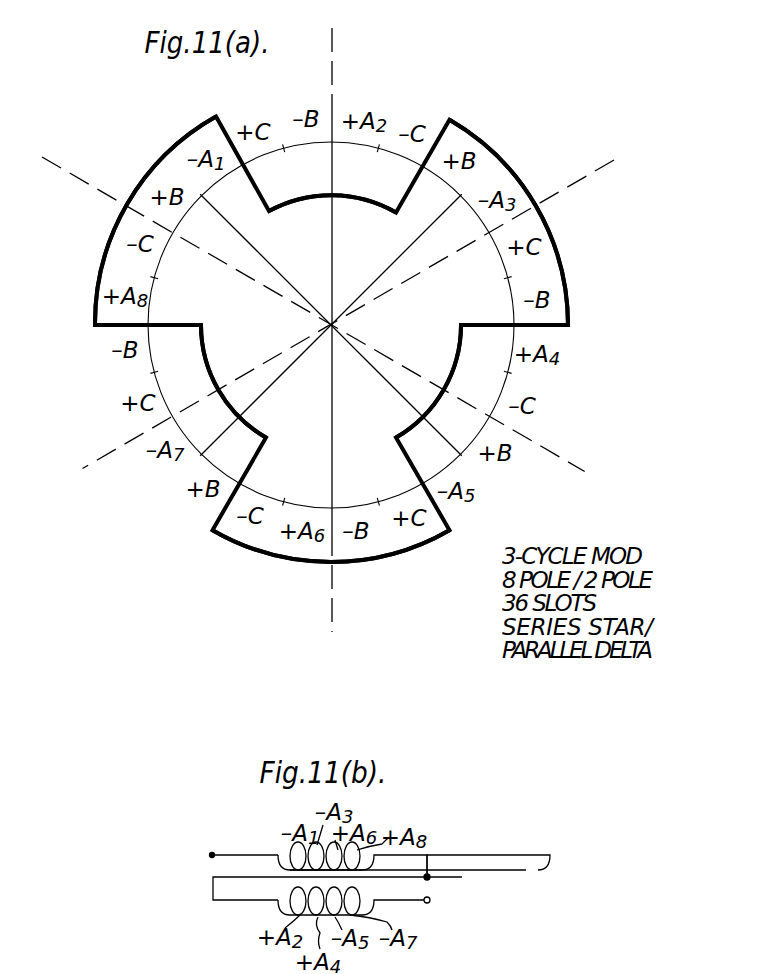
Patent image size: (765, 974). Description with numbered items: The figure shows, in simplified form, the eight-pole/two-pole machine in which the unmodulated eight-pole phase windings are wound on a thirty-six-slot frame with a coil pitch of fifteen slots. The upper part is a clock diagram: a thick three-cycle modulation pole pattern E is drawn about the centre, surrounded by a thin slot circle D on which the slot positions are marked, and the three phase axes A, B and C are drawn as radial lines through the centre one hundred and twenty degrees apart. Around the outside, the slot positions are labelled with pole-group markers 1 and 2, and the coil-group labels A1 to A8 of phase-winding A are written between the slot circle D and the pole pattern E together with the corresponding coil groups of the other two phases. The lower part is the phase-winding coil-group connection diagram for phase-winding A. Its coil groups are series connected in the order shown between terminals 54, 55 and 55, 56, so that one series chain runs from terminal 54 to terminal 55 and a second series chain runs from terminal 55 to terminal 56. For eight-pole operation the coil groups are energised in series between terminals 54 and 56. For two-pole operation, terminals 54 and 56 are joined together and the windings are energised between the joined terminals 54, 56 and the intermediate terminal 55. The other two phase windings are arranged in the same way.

In FIG. 11A, the pole group 1 slots 1 is at (330, 327).
In FIG. 11A, the pole group 2 slots 2 is at (334, 325).
In FIG. 11A, the phase-winding A is at (301, 305).
In FIG. 11A, the phase B axis B is at (359, 308).
In FIG. 11A, the phase C axis C is at (325, 344).
In FIG. 11A, the stator slot circle D is at (505, 383).
In FIG. 11A, the 3-cycle modulation pole pattern E is at (498, 151).
In FIG. 11B, the terminal 54 is at (212, 852).
In FIG. 11B, the terminal 55 is at (352, 883).
In FIG. 11B, the terminal 56 is at (430, 900).